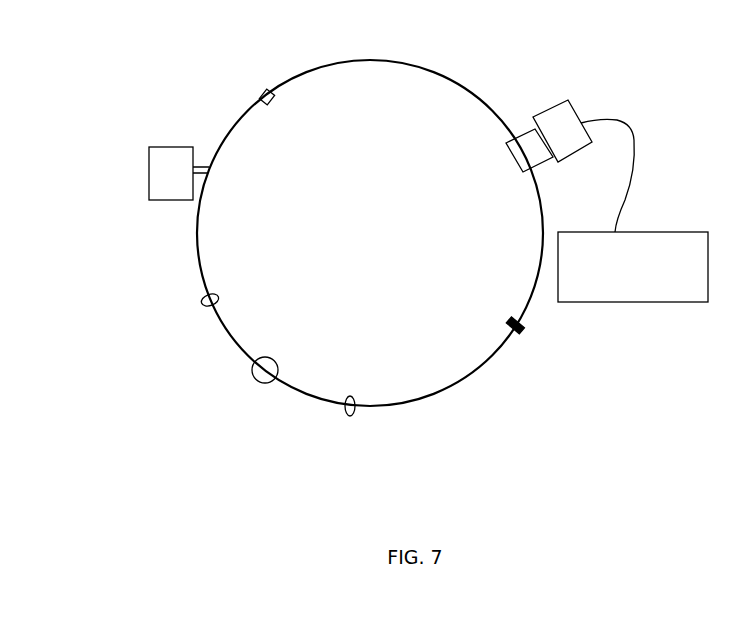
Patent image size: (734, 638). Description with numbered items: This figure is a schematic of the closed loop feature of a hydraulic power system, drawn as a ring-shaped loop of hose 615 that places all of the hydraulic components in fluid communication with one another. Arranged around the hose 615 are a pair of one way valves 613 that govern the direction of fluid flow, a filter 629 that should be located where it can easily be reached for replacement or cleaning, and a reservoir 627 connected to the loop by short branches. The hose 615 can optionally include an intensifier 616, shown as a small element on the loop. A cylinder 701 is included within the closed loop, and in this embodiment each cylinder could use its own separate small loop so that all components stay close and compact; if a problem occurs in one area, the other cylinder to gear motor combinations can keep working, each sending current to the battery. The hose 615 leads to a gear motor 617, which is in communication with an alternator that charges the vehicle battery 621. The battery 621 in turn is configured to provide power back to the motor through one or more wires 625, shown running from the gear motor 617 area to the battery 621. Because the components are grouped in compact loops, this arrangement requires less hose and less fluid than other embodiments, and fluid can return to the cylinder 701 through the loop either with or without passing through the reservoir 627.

The hose 615 is at (358, 60).
The filter 629 is at (262, 91).
The reservoir 627 is at (149, 163).
The one way valve 613 is at (202, 297).
The cylinder 701 is at (254, 380).
The intensifier 616 is at (522, 332).
The gear motor 617 is at (553, 102).
The wires 625 is at (633, 132).
The vehicle battery 621 is at (681, 232).